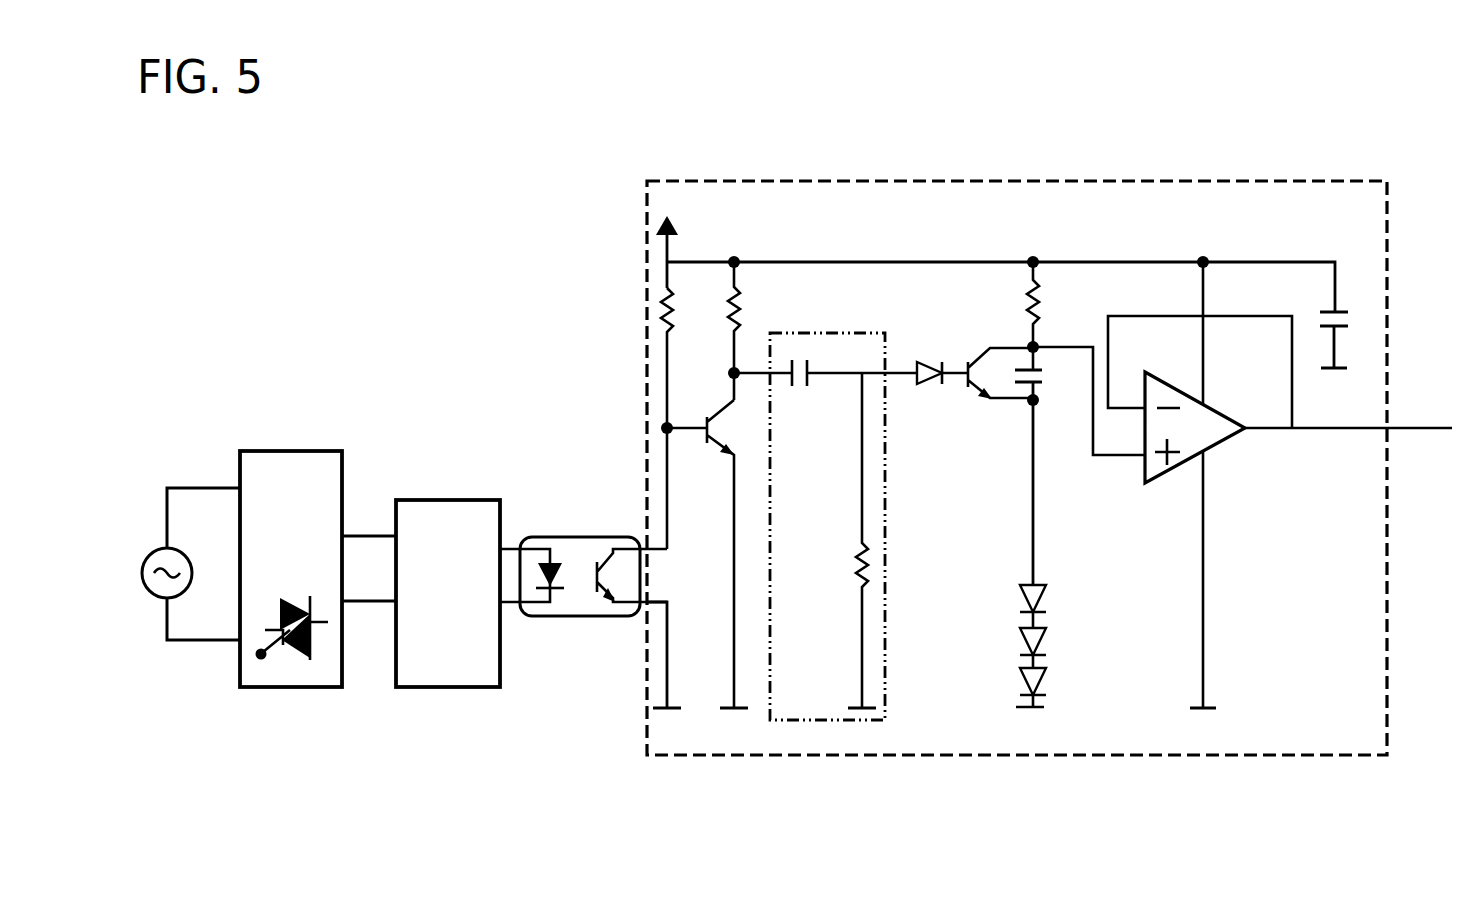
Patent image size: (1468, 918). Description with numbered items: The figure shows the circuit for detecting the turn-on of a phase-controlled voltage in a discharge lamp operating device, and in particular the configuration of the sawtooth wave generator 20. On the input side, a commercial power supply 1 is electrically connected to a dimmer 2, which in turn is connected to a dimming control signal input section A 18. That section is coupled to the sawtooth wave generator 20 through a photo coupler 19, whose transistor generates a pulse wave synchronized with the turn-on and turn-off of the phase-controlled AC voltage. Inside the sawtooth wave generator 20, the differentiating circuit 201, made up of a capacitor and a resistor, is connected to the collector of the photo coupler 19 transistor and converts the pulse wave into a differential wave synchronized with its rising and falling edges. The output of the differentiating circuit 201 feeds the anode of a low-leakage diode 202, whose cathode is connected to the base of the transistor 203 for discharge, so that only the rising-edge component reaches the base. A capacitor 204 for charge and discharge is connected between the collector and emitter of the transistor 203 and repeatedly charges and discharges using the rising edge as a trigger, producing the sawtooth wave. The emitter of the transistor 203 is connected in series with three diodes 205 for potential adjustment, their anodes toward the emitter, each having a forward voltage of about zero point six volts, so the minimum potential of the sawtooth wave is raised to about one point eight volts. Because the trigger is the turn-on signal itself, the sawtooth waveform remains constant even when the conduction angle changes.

The commercial power supply 1 is at (160, 548).
The dimmer 2 is at (283, 463).
The dimming control signal input section A 18 is at (453, 513).
The photo coupler 19 is at (567, 549).
The sawtooth wave generator 20 is at (913, 179).
The differentiating circuit 201 is at (802, 722).
The diode 202 is at (931, 412).
The transistor 203 is at (977, 357).
The capacitor 204 is at (1042, 388).
The diodes for potential adjustment 205 is at (1050, 643).